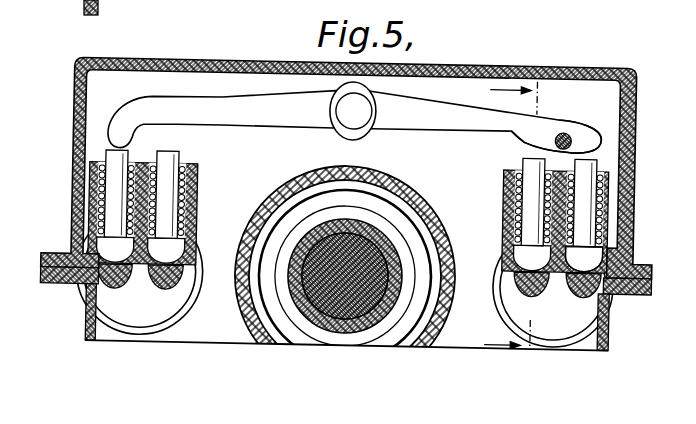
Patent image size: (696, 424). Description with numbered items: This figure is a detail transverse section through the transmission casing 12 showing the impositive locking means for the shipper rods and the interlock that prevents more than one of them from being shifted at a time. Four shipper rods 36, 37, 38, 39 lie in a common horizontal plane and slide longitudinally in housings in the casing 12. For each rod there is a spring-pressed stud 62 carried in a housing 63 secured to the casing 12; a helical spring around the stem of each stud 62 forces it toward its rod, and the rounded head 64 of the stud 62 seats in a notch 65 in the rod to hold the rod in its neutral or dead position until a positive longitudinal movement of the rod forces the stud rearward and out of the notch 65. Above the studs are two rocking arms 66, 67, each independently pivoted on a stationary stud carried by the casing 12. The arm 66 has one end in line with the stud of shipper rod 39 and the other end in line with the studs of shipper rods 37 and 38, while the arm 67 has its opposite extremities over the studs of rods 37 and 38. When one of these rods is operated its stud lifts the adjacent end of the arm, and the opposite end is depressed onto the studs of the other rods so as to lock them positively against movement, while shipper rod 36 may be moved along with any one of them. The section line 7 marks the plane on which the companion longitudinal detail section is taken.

The casing 12 is at (183, 65).
The section line 7— 7 is at (515, 207).
The rocking arm 66 is at (266, 122).
The rocking arm 67 is at (596, 128).
The spring-pressed stud 62 is at (126, 157).
The housing 63 is at (613, 180).
The rounded head 64 is at (589, 257).
The notch 65 is at (580, 290).
The shipper rod 38 is at (514, 294).
The shipper rod 37 is at (605, 298).
The shipper rod 36 is at (175, 292).
The shipper rod 39 is at (102, 290).